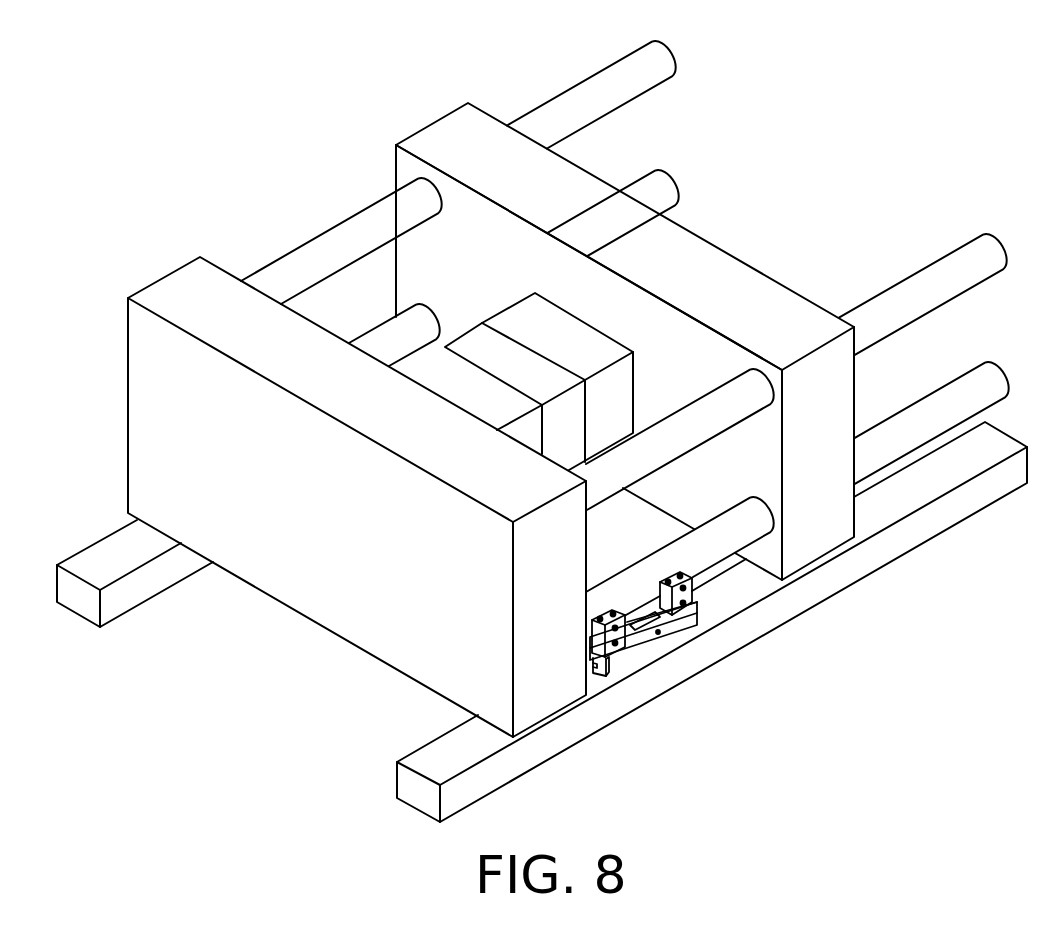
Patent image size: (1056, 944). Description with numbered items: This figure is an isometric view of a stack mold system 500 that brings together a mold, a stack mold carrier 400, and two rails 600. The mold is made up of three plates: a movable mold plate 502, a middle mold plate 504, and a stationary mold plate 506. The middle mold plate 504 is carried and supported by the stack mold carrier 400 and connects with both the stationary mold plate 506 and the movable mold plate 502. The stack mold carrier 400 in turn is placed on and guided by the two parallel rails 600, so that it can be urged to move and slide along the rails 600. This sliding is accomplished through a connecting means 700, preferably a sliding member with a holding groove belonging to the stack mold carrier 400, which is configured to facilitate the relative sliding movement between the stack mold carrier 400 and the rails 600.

The stack mold system 500 is at (495, 46).
The movable mold plate 502 is at (540, 325).
The middle mold plate 504 is at (487, 353).
The stationary mold plate 506 is at (452, 388).
The rails 600 is at (893, 537).
The stack mold carrier 400 is at (640, 645).
The connecting means 700 is at (597, 667).